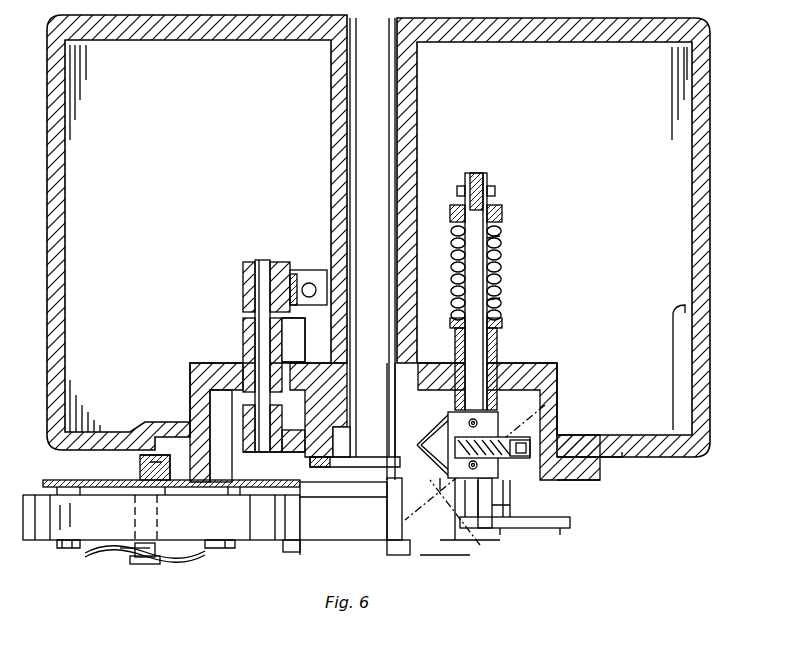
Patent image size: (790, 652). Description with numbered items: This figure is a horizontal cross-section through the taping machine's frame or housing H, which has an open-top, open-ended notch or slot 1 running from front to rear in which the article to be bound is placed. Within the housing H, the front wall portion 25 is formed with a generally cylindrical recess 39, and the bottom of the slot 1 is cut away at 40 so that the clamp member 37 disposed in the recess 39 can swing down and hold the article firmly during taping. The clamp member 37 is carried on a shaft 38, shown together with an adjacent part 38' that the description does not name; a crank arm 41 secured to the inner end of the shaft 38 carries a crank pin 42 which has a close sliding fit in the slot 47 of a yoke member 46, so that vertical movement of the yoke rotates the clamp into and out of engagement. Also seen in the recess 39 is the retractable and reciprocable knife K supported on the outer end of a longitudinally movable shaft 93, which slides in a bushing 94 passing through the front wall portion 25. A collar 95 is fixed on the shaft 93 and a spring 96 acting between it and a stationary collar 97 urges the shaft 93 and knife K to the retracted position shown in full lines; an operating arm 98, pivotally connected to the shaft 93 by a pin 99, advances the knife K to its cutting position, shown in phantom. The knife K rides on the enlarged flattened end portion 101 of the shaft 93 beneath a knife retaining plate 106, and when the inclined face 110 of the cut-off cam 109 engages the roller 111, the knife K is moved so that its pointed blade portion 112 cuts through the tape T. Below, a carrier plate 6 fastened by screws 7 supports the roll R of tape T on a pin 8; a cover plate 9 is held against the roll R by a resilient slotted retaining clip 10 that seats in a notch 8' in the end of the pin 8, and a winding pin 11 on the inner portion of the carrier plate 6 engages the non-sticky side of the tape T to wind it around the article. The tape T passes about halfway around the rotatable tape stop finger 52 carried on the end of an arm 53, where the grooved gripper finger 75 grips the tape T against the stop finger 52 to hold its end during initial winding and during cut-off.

The frame or housing H is at (716, 326).
The notch or slot 1 is at (375, 126).
The pointed blade portion 112 is at (398, 415).
The recess 39 is at (220, 405).
The cut away 40 is at (343, 440).
The shaft 38 is at (238, 356).
The crank arm 41 is at (262, 262).
The crank pin 42 is at (278, 262).
The slot 47 is at (306, 268).
The yoke member 46 is at (300, 305).
The shaft bushing 38' is at (284, 355).
The clamp member 37 is at (280, 452).
The operating arm 98 is at (478, 175).
The pin 99 is at (497, 192).
The collar 95 is at (502, 212).
The shaft 93 is at (487, 258).
The spring 96 is at (500, 240).
The stationary collar 97 is at (502, 320).
The bushing 94 is at (498, 338).
The knife K is at (448, 421).
The knife retaining plate 106 is at (468, 480).
The enlarged flattened end portion 101 is at (560, 412).
The roller 111 is at (535, 428).
The front wall portion 25 is at (630, 455).
The knife actuating or cut-off cam 109 is at (559, 538).
The inclined face 110 is at (470, 532).
The gripper finger 75 is at (455, 560).
The carrier plate 6 is at (60, 480).
The roll R is at (45, 540).
The screws 7 is at (165, 492).
The resilient slotted retaining clip 10 is at (170, 556).
The pin 8 is at (145, 566).
The notch 8' is at (120, 567).
The cover plate 9 is at (222, 548).
The winding pin 11 is at (293, 552).
The arm 53 is at (355, 470).
The tape T is at (313, 540).
The tape stop finger 52 is at (398, 548).